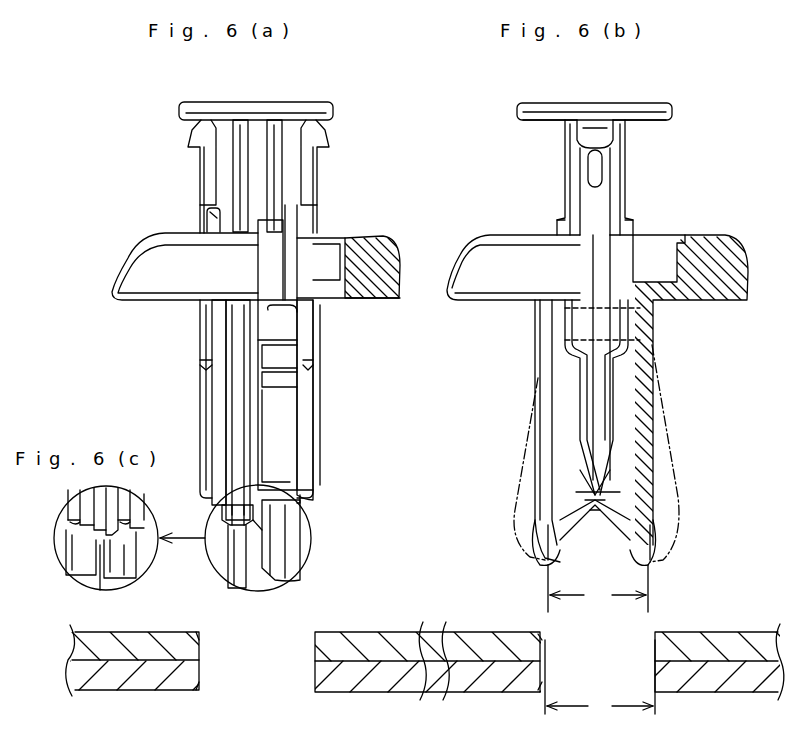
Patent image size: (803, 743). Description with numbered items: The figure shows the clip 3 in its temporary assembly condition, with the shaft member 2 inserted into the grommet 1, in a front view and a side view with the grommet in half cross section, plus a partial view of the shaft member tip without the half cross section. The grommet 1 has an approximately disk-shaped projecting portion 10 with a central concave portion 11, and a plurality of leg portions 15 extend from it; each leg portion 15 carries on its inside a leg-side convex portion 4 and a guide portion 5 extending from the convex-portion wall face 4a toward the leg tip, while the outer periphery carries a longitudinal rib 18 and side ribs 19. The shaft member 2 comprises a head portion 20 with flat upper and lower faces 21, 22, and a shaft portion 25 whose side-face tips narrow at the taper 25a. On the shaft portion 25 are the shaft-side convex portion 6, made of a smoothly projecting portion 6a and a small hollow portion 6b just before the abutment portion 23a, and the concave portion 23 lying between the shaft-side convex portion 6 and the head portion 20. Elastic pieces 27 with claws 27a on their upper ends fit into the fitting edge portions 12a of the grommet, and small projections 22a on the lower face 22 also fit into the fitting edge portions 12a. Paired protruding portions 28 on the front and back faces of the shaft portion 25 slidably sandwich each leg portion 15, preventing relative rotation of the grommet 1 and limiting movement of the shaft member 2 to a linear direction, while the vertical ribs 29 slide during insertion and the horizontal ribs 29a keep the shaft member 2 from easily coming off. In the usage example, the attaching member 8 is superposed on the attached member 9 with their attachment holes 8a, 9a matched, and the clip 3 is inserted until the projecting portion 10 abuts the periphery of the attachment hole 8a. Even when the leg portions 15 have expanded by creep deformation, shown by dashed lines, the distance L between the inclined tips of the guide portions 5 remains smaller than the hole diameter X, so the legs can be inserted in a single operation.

In FIG. 6B, the grommet 1 is at (480, 334).
In FIG. 6A, the shaft member 2 is at (124, 124).
In FIG. 6A, the clip 3 is at (366, 112).
In FIG. 6B, the leg-side convex portion 4 is at (595, 500).
In FIG. 6B, the convex-portion wall face 4a is at (598, 538).
In FIG. 6C, the convex-portion wall face 4a is at (128, 545).
In FIG. 6A, the guide portion 5 is at (275, 555).
In FIG. 6B, the guide portion 5 is at (548, 562).
In FIG. 6C, the guide portion 5 is at (80, 552).
In FIG. 6A, the shaft-side convex portion 6 is at (358, 380).
In FIG. 6A, the projecting portion 6a is at (284, 404).
In FIG. 6A, the small hollow portion 6b is at (284, 388).
In FIG. 6A, the attaching member 8 is at (104, 634).
In FIG. 6B, the attaching member 8 is at (745, 640).
In FIG. 6A, the attachment hole 8a is at (199, 634).
In FIG. 6B, the attachment hole 8a is at (540, 634).
In FIG. 6A, the attached member 9 is at (112, 686).
In FIG. 6B, the attached member 9 is at (745, 690).
In FIG. 6A, the attachment hole 9a is at (199, 690).
In FIG. 6B, the attachment hole 9a is at (542, 690).
In FIG. 6A, the projecting portion 10 is at (123, 258).
In FIG. 6B, the projecting portion 10 is at (512, 306).
In FIG. 6A, the concave portion 11 is at (340, 236).
In FIG. 6A, the fitting edge portion 12a is at (306, 226).
In FIG. 6A, the leg portion 15 is at (214, 501).
In FIG. 6B, the leg portion 15 is at (536, 376).
In FIG. 6A, the rib 18 is at (250, 440).
In FIG. 6B, the rib 18 is at (538, 476).
In FIG. 6B, the ribs 19 is at (538, 398).
In FIG. 6A, the head portion 20 is at (182, 118).
In FIG. 6B, the head portion 20 is at (518, 100).
In FIG. 6B, the upper face 21 is at (640, 100).
In FIG. 6B, the lower face 22 is at (648, 120).
In FIG. 6B, the small projection 22a is at (595, 122).
In FIG. 6A, the concave portion 23 is at (286, 342).
In FIG. 6B, the concave portion 23 is at (602, 328).
In FIG. 6A, the abutment portion 23a is at (286, 356).
In FIG. 6A, the shaft portion 25 is at (198, 204).
In FIG. 6A, the taper 25a is at (314, 484).
In FIG. 6A, the elastic piece 27 is at (318, 176).
In FIG. 6B, the elastic piece 27 is at (606, 162).
In FIG. 6A, the claw 27a is at (329, 134).
In FIG. 6B, the claw 27a is at (574, 133).
In FIG. 6A, the protruding portion 28 is at (214, 318).
In FIG. 6B, the protruding portion 28 is at (556, 221).
In FIG. 6A, the vertical rib 29 is at (200, 402).
In FIG. 6B, the vertical rib 29 is at (600, 413).
In FIG. 6A, the horizontal rib 29a is at (200, 363).
In FIG. 6B, the horizontal rib 29a is at (628, 352).
In FIG. 6B, the distance between inclination portions L is at (598, 588).
In FIG. 6B, the hole diameter X is at (600, 678).